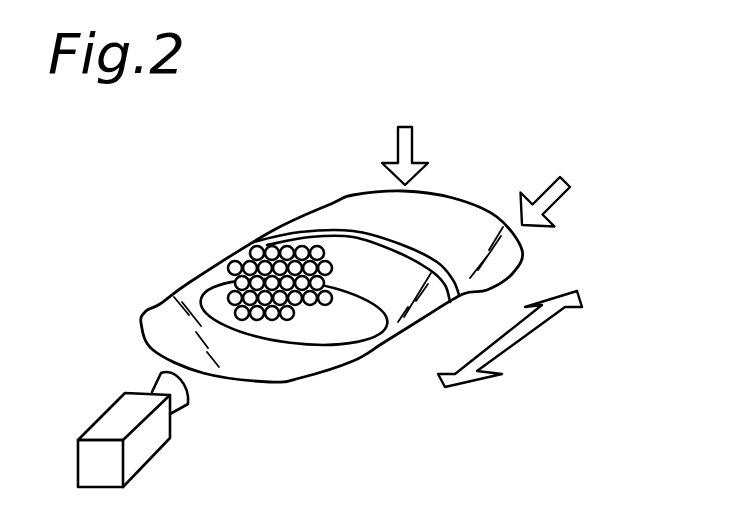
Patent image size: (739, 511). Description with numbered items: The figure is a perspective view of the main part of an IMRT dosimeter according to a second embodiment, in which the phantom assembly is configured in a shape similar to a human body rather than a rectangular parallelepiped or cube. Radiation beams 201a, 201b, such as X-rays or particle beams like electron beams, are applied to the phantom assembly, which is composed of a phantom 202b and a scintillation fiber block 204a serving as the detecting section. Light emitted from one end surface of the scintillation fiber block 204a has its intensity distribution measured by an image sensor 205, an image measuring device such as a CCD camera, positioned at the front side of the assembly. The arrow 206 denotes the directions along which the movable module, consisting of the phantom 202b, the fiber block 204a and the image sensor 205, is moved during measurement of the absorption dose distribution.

The radiation beam 201a is at (397, 141).
The radiation beam 201b is at (549, 186).
The phantom 202b is at (169, 313).
The scintillation fiber block 204a is at (238, 265).
The image sensor 205 is at (138, 439).
The directions of movement 206 is at (517, 343).